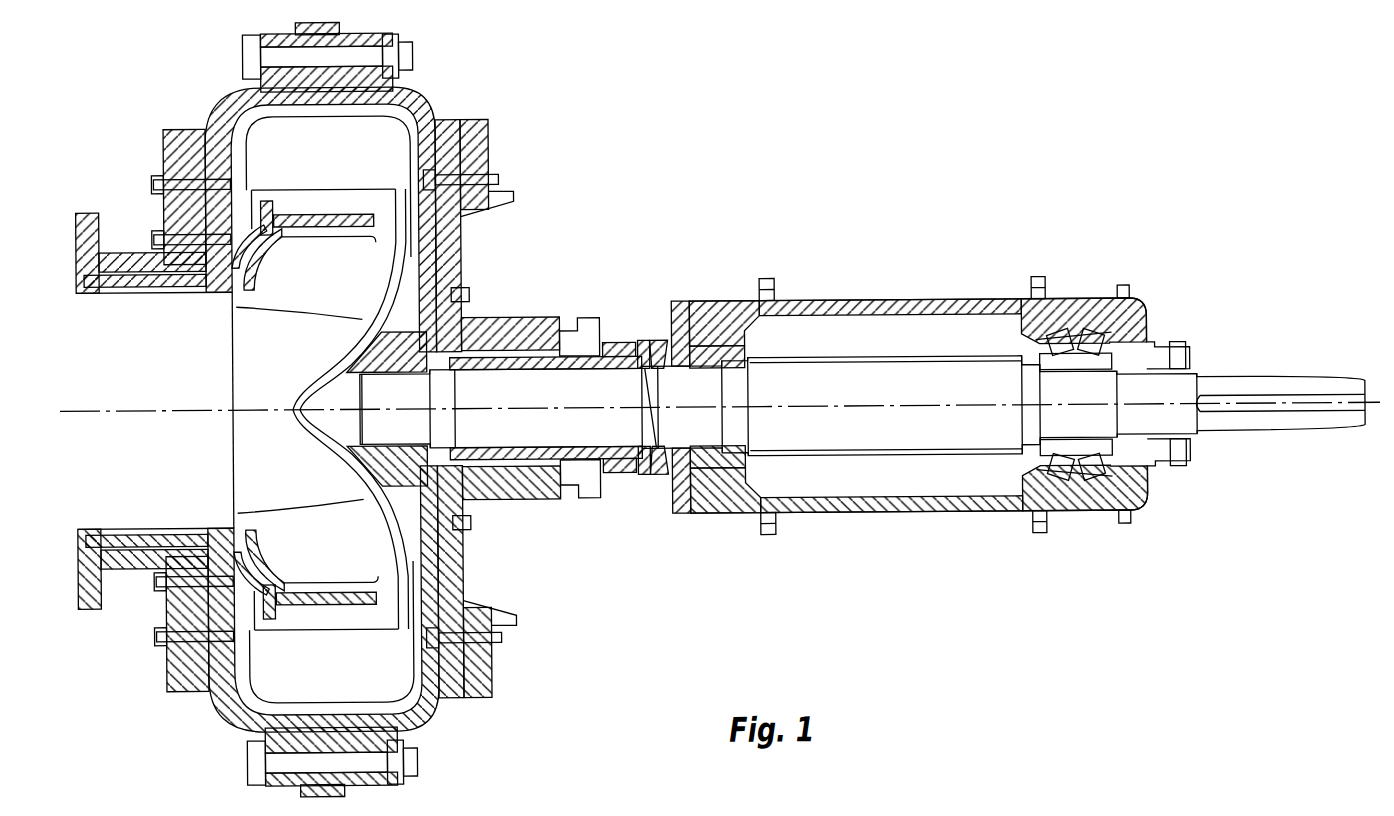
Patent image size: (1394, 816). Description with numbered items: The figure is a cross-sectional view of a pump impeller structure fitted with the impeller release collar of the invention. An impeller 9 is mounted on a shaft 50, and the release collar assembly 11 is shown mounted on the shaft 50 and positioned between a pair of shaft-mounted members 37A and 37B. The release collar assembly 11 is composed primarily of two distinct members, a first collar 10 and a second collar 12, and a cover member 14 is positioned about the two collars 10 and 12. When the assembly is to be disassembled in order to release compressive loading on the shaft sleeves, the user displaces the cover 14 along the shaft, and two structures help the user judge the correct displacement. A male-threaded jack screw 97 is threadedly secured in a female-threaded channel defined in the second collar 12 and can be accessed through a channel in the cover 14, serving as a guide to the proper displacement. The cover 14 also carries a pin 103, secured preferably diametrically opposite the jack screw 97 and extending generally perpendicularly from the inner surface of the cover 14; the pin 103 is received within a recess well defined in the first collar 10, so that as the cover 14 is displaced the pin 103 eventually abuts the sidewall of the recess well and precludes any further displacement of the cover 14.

The impeller 9 is at (356, 302).
The first collar 10 is at (657, 418).
The release collar assembly 11 is at (642, 340).
The second collar 12 is at (641, 387).
The cover member 14 is at (656, 340).
The shaft-mounted member 37A is at (610, 472).
The shaft-mounted member 37B is at (674, 338).
The shaft 50 is at (505, 407).
The jack screw 97 is at (628, 342).
The pin 103 is at (654, 474).